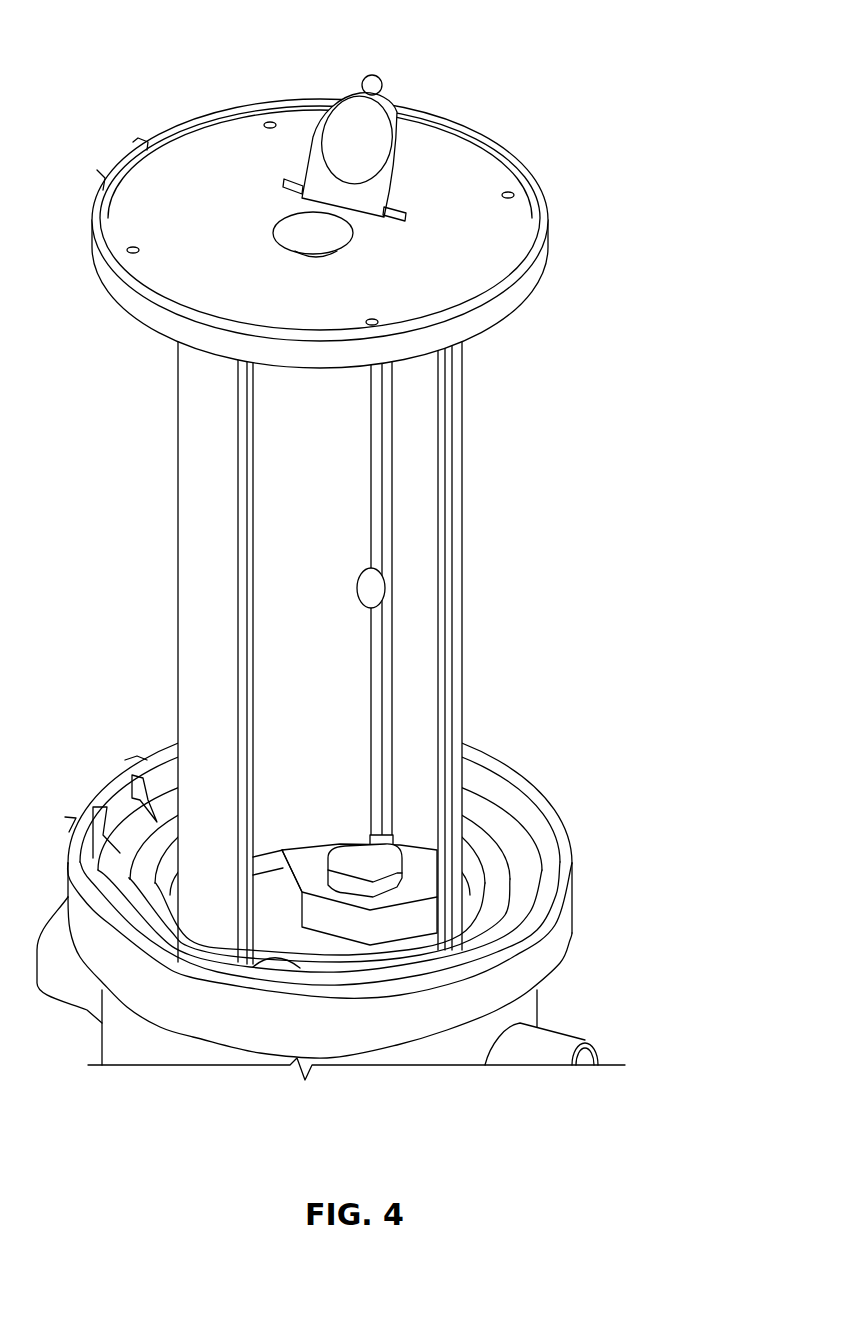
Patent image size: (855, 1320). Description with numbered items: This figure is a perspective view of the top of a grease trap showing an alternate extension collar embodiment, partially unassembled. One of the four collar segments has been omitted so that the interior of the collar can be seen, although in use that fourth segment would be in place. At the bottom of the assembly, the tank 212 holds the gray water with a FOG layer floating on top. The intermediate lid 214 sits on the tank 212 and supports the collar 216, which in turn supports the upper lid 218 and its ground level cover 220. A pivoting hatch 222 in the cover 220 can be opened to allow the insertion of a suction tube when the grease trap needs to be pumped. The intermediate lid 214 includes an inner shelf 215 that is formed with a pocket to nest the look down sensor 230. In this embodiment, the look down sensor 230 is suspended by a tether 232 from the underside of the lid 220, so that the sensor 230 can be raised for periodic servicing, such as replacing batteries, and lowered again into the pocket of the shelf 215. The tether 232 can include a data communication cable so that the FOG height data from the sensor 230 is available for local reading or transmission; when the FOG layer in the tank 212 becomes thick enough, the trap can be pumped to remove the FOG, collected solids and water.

The tank 212 is at (487, 995).
The intermediate lid 214 is at (490, 758).
The inner shelf 215 is at (410, 890).
The collar 216 is at (458, 648).
The upper lid 218 is at (485, 320).
The ground level cover 220 is at (485, 258).
The pivoting hatch 222 is at (383, 113).
The look down sensor 230 is at (393, 855).
The tether 232 is at (375, 517).